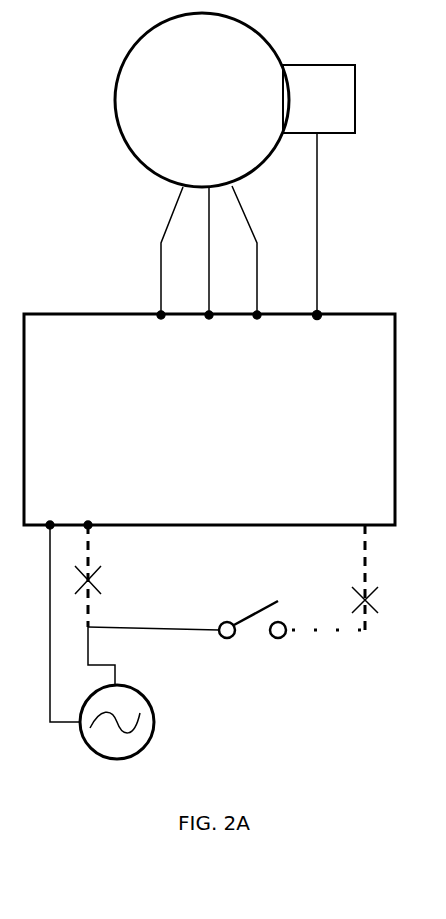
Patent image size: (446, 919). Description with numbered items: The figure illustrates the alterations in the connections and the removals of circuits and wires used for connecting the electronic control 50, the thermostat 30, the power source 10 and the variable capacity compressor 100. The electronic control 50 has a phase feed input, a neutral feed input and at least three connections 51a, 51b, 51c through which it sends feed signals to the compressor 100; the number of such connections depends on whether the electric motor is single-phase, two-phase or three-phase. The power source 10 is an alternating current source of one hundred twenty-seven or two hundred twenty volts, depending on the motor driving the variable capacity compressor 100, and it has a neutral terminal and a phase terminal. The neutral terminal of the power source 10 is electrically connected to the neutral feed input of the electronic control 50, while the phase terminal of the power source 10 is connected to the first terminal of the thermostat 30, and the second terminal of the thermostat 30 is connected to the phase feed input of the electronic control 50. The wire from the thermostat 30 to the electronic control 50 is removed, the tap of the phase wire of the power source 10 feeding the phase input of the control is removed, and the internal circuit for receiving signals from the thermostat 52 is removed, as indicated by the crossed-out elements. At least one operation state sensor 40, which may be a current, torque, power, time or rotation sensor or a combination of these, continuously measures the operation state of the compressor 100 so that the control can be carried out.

The variable capacity compressor 100 is at (202, 100).
The operation state sensor 40 is at (319, 192).
The electronic control 50 is at (209, 421).
The connection 51a is at (169, 264).
The connection 51b is at (212, 263).
The connection 51c is at (250, 263).
The internal circuit for receiving signals from the thermostat 52 is at (355, 490).
The thermostat 30 is at (187, 639).
The power source 10 is at (102, 658).